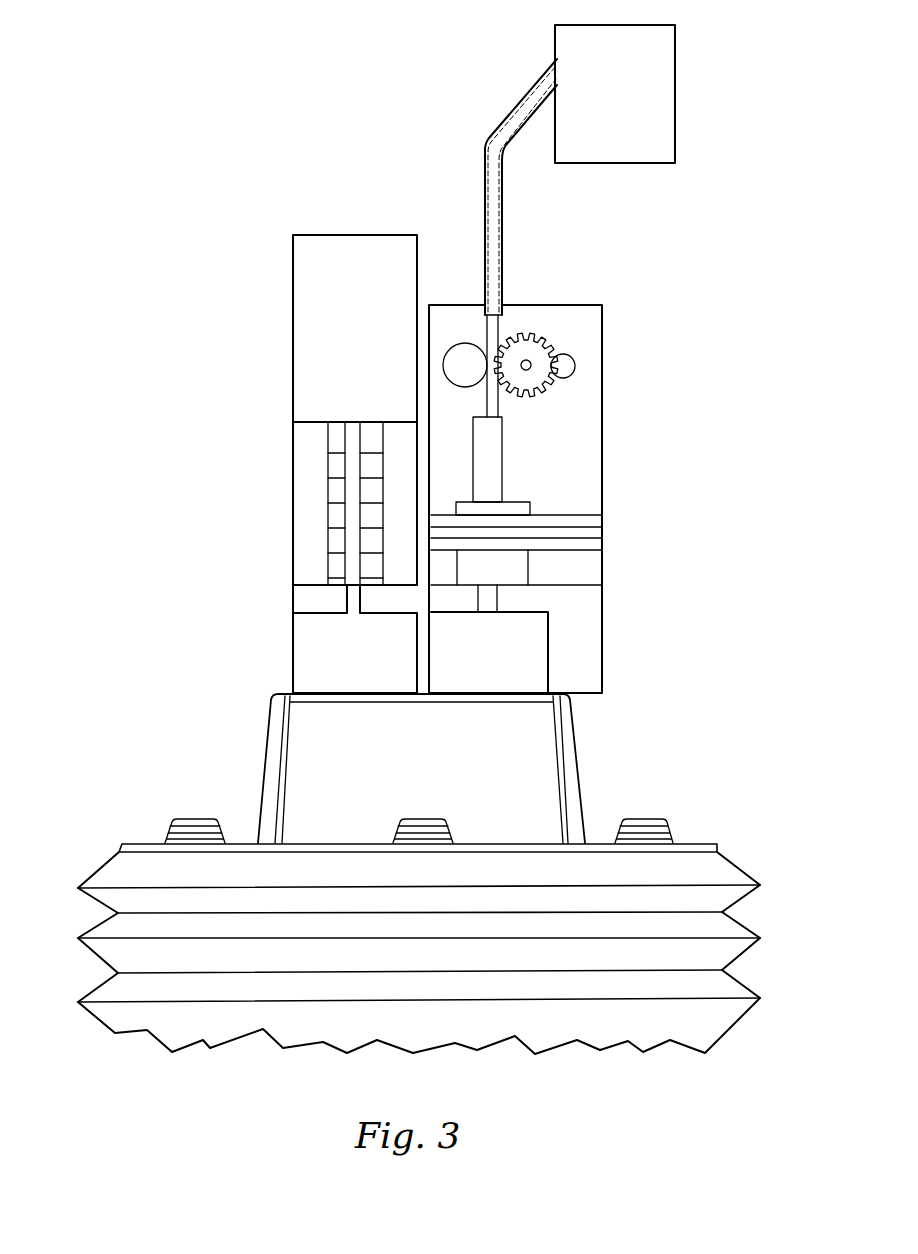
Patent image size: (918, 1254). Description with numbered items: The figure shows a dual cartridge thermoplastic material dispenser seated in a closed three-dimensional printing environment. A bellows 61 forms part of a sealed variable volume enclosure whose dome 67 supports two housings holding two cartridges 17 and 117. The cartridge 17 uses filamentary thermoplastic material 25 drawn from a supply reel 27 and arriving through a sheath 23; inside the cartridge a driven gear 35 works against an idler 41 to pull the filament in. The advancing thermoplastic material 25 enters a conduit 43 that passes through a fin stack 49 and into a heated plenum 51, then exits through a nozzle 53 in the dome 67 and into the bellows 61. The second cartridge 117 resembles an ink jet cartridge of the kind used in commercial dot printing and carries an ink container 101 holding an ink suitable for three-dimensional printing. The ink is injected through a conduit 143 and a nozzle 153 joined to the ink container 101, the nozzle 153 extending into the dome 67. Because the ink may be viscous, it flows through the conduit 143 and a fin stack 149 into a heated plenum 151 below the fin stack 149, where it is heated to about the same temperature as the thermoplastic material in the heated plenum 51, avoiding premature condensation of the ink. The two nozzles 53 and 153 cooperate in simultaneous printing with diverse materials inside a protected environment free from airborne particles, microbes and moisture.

The cartridge 17 is at (596, 381).
The sheath 23 is at (500, 230).
The filamentary thermoplastic material 25 is at (492, 333).
The supply reel 27 is at (668, 101).
The driven gear 35 is at (537, 358).
The idler 41 is at (471, 362).
The conduit 43 is at (494, 444).
The fin stack 49 is at (588, 520).
The heated plenum 51 is at (523, 658).
The nozzle 53 is at (512, 762).
The bellows 61 is at (727, 868).
The dome 67 is at (570, 778).
The ink container 101 is at (307, 302).
The cartridge 117 is at (293, 470).
The conduit 143 is at (352, 438).
The fin stack 149 is at (335, 508).
The heated plenum 151 is at (303, 653).
The nozzle 153 is at (347, 787).